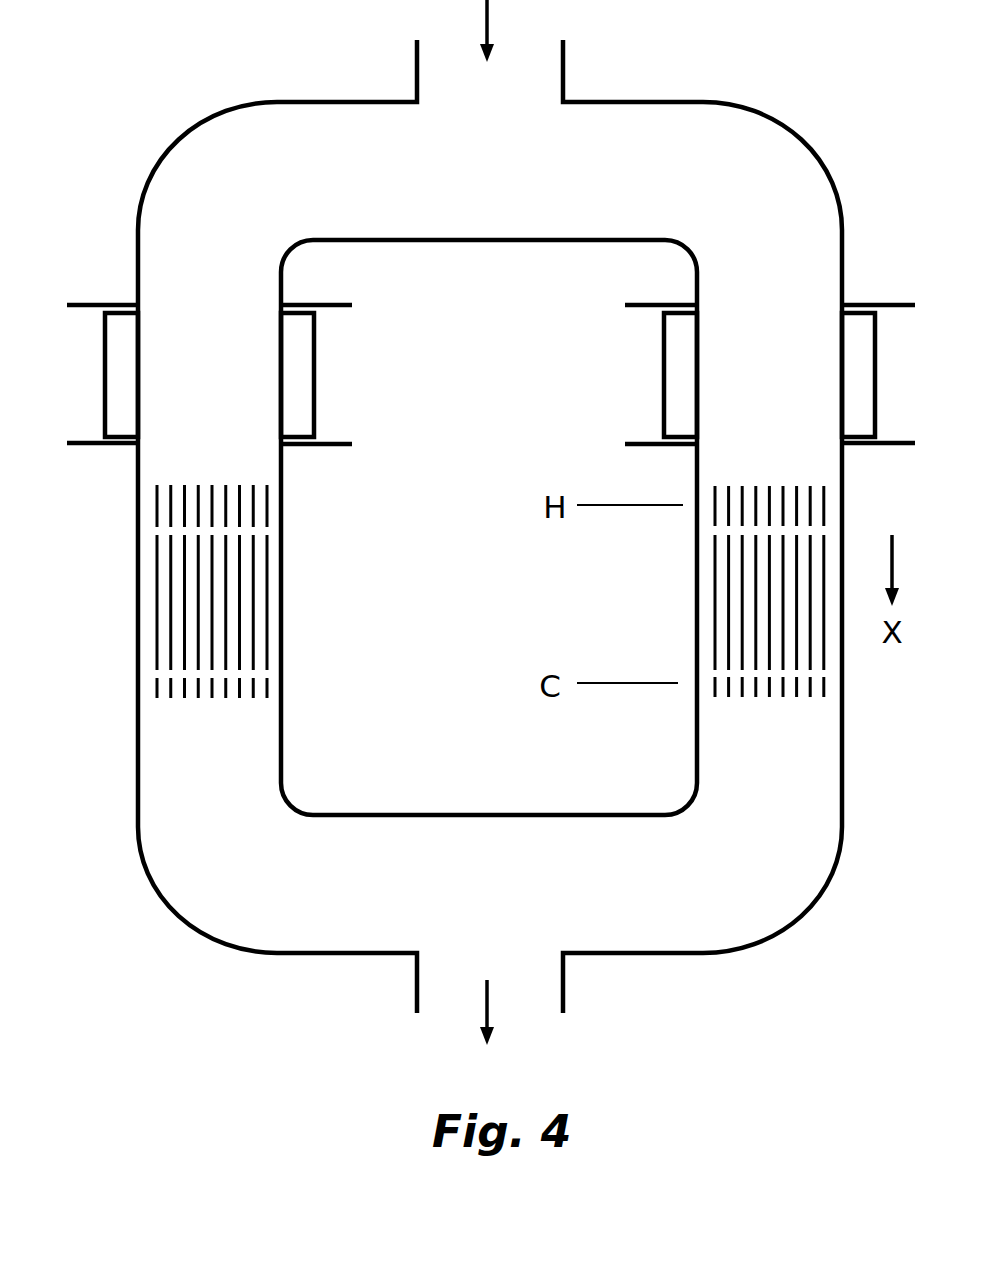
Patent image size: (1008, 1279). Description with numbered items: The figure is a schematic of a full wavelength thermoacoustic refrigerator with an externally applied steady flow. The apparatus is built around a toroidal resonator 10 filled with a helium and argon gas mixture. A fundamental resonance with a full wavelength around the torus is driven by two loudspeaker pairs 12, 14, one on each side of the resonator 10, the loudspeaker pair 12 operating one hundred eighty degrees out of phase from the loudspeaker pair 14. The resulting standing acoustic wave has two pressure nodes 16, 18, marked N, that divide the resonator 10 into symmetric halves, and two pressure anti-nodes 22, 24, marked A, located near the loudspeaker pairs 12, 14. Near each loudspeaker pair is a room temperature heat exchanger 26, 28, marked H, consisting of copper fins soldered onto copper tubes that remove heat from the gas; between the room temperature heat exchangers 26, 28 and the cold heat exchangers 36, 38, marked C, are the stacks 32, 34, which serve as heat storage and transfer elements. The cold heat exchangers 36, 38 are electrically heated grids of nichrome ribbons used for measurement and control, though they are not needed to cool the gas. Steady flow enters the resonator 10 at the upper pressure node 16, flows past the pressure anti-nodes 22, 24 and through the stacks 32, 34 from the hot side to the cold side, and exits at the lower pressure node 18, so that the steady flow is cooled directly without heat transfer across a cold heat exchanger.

The toroidal resonator 10 is at (747, 130).
The loudspeaker pair 12 is at (297, 395).
The loudspeaker pair 14 is at (680, 397).
The pressure node 16 is at (545, 139).
The pressure node 18 is at (545, 934).
The pressure anti-node 22 is at (197, 424).
The pressure anti-node 24 is at (755, 424).
The room temperature heat exchanger 26 is at (286, 506).
The room temperature heat exchanger 28 is at (692, 496).
The stack 32 is at (286, 581).
The stack 34 is at (692, 619).
The cold heat exchanger 36 is at (286, 686).
The cold heat exchanger 38 is at (692, 695).